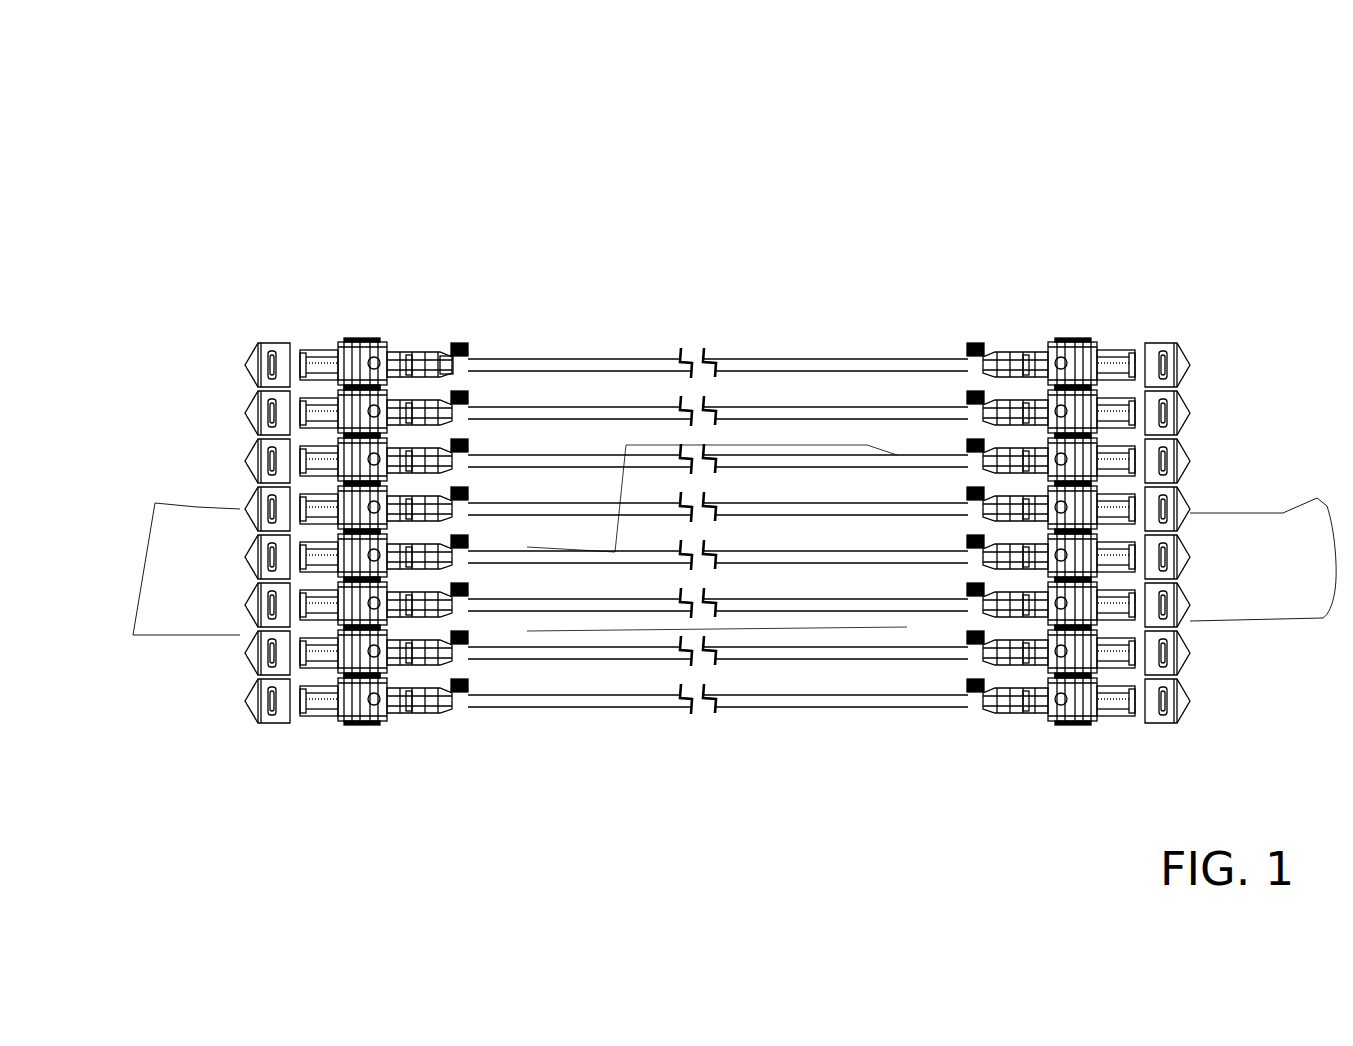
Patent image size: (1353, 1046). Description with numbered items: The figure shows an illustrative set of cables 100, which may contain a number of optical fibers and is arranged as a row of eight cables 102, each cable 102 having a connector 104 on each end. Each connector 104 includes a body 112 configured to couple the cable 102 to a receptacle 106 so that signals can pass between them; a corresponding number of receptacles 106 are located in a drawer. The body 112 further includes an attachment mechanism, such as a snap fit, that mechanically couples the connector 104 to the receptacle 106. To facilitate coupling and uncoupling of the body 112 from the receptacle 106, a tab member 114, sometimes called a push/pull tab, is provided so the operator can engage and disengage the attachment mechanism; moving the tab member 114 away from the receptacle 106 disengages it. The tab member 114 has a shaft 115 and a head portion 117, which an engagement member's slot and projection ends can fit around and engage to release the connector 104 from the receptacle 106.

The set of cables 100 is at (746, 192).
The cable 102 is at (782, 358).
The connector 104 is at (396, 308).
The receptacle 106 is at (245, 358).
The body 112 is at (338, 343).
The tab member 114 is at (488, 332).
The shaft 115 is at (425, 340).
The head portion 117 is at (455, 340).